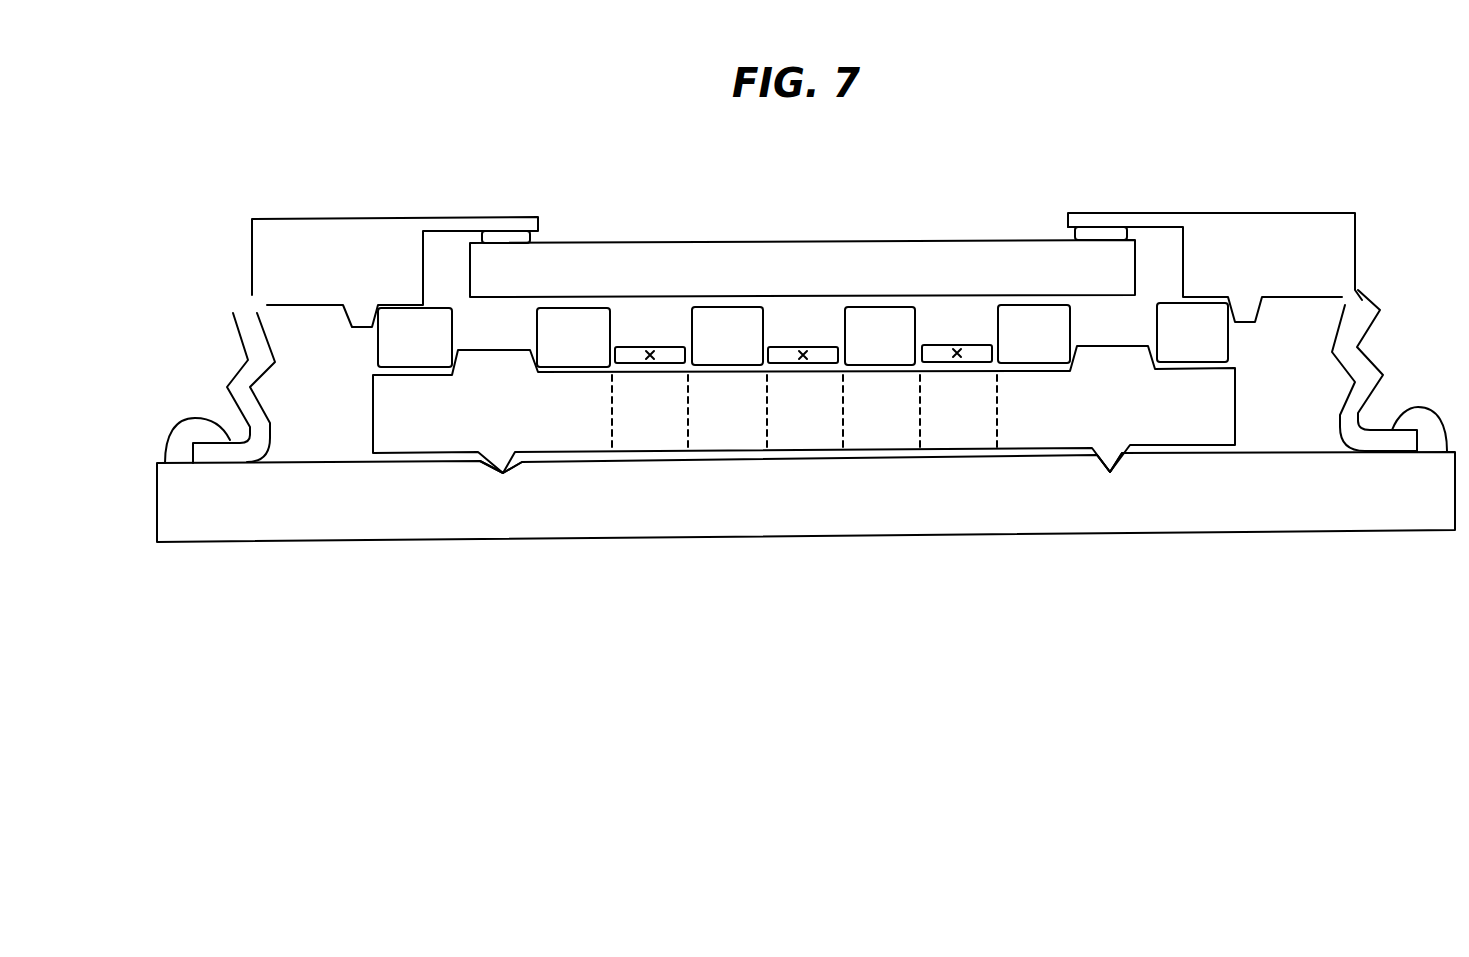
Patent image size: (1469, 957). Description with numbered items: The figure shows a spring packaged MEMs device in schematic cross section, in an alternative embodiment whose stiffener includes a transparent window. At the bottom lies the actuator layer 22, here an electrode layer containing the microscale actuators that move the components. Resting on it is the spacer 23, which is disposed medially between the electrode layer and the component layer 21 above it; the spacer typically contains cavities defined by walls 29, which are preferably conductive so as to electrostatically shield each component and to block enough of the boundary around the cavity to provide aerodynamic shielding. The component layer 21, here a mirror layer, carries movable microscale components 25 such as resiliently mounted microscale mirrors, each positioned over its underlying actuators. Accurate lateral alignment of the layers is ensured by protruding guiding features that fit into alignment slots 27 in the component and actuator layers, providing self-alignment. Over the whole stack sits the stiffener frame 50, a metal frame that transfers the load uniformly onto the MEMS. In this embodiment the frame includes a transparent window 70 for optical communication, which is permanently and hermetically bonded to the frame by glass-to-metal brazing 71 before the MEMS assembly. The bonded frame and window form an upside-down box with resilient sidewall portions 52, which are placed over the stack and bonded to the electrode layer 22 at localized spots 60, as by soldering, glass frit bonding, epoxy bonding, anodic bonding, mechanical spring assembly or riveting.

The stiffener frame 50 is at (310, 219).
The sidewall portion 52 is at (240, 300).
The bonded spots 60 is at (165, 437).
The glass-to-metal brazing 71 is at (538, 238).
The transparent window 70 is at (800, 240).
The component layer 21 is at (893, 305).
The movable microscale component 25 is at (665, 345).
The spacer 23 is at (410, 453).
The alignment slots 27 is at (515, 477).
The walls 29 is at (720, 430).
The actuator layer 22 is at (1262, 530).